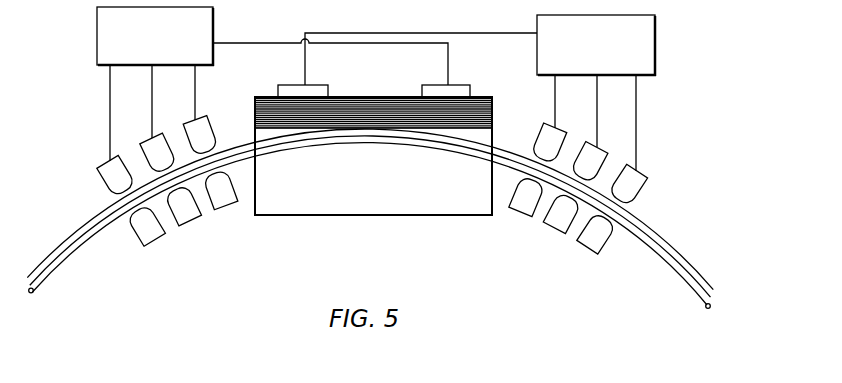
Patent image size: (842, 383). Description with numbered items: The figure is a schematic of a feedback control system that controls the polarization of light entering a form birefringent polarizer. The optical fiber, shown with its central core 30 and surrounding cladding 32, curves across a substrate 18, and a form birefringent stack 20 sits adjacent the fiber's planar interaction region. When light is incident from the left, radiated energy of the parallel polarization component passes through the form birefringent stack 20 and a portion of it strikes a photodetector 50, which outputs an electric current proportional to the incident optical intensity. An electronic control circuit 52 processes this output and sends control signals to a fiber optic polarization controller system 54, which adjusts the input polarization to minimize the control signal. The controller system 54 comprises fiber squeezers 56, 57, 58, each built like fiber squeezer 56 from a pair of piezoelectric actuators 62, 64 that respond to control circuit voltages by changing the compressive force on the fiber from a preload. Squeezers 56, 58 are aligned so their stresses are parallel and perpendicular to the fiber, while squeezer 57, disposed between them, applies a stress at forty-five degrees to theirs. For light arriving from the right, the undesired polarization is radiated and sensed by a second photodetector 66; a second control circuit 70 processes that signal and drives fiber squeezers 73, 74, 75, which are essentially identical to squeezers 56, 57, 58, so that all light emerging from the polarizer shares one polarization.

The substrate 18 is at (372, 151).
The form birefringent stack 20 is at (373, 99).
The central core 30 is at (661, 264).
The cladding 32 is at (660, 237).
The photodetector 50 is at (478, 77).
The electronic control circuit 52 is at (97, 30).
The fiber optic polarization controller system 54 is at (119, 131).
The fiber squeezer 56 is at (155, 274).
The fiber squeezer 57 is at (194, 229).
The fiber squeezer 58 is at (229, 214).
The piezoelectric actuator 62 is at (103, 180).
The piezoelectric actuator 64 is at (136, 229).
The second photodetector 66 is at (283, 85).
The second control circuit 70 is at (655, 41).
The fiber squeezer 73 is at (514, 221).
The fiber squeezer 74 is at (548, 239).
The fiber squeezer 75 is at (586, 261).